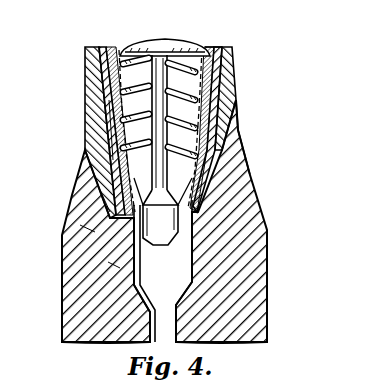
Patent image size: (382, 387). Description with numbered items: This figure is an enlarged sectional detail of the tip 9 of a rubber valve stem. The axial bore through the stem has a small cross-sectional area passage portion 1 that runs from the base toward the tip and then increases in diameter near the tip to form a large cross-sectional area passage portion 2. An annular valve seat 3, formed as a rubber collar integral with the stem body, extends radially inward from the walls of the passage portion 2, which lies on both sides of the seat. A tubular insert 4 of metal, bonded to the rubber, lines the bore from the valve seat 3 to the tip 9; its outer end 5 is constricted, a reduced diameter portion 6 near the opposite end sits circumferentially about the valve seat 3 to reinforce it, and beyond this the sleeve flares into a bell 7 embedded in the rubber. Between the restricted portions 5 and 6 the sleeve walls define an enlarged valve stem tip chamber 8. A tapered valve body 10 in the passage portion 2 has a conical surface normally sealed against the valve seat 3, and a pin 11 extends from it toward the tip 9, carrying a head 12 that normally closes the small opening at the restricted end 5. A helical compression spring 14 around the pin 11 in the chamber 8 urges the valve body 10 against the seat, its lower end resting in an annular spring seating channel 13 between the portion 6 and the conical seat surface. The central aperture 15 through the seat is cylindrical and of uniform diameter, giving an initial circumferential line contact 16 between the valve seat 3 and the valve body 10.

The small cross-sectional area passage portion 1 is at (166, 330).
The large cross-sectional area passage portion 2 is at (183, 286).
The valve seat 3 is at (90, 163).
The tubular insert 4 is at (237, 124).
The outer end of the insert 5 is at (206, 46).
The reduced diameter portion of the sleeve 6 is at (82, 206).
The bell 7 is at (92, 236).
The valve stem tip chamber 8 is at (85, 84).
The tip 9 is at (110, 44).
The tapered valve body 10 is at (138, 240).
The pin 11 is at (170, 113).
The head 12 is at (150, 40).
The spring seating channel 13 is at (217, 210).
The helical compression spring 14 is at (233, 152).
The central aperture 15 is at (207, 182).
The circumferential line contact 16 is at (119, 262).